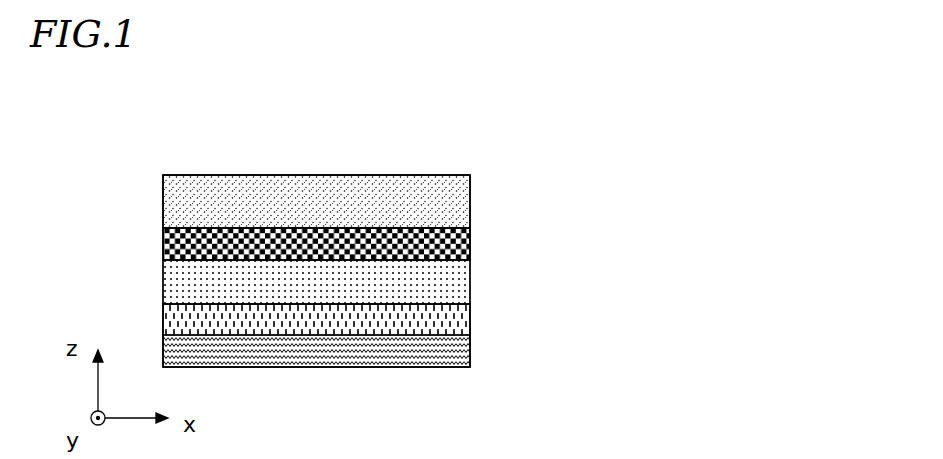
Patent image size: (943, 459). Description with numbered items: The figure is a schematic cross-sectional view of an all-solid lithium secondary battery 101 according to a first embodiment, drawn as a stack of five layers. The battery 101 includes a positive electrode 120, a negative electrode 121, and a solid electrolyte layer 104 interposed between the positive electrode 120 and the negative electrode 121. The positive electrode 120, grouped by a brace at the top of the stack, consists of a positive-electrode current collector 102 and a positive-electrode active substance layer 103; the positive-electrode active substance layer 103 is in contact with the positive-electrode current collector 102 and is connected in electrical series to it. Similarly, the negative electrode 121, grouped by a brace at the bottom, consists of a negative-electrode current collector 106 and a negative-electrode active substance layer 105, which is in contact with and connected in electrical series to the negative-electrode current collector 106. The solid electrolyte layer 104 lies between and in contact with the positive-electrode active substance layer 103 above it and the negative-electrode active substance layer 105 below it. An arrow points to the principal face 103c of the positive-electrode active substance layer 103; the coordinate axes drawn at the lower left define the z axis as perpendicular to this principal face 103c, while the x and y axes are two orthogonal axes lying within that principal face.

The all-solid lithium secondary battery 101 is at (712, 160).
The positive-electrode current collector 102 is at (426, 190).
The positive-electrode active substance layer 103 is at (440, 238).
The principal face 103c is at (237, 212).
The solid electrolyte layer 104 is at (425, 283).
The negative-electrode active substance layer 105 is at (425, 322).
The negative-electrode current collector 106 is at (430, 355).
The positive electrode 120 is at (598, 173).
The negative electrode 121 is at (598, 310).